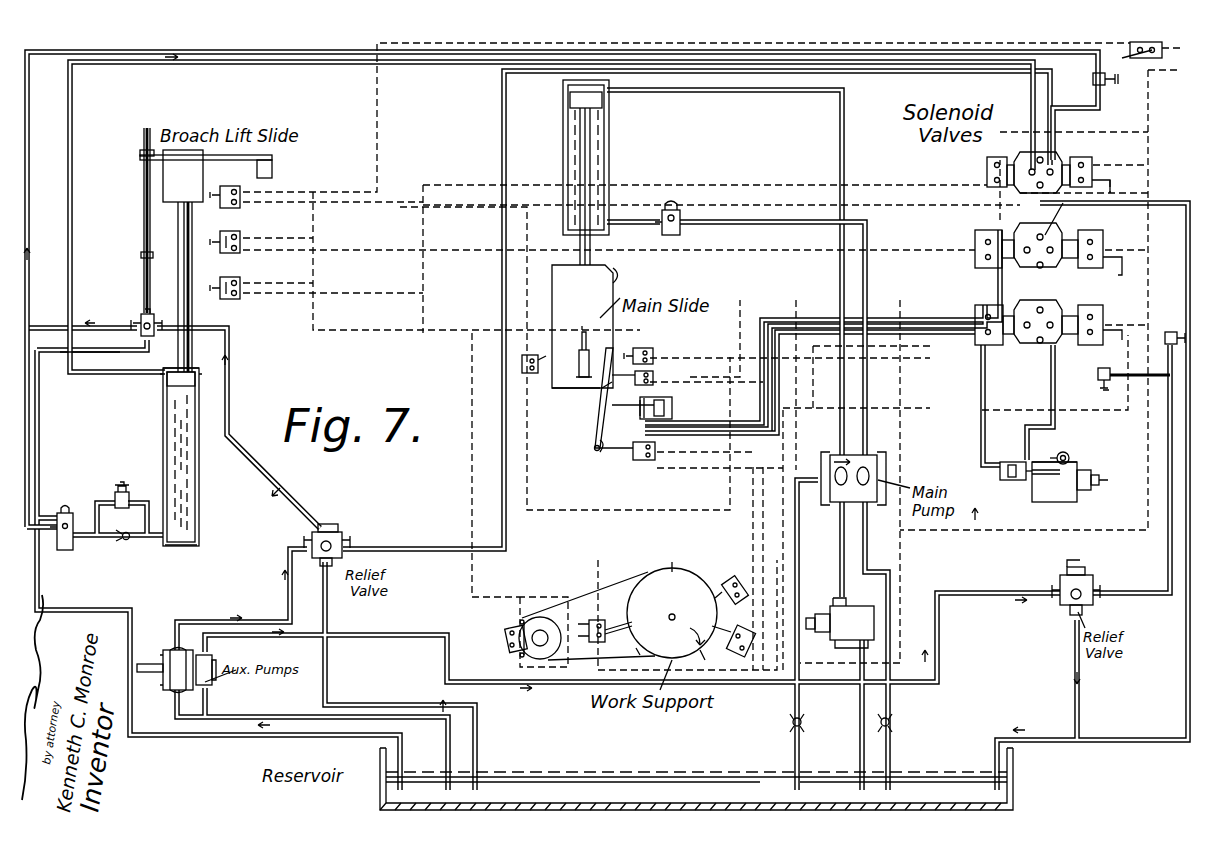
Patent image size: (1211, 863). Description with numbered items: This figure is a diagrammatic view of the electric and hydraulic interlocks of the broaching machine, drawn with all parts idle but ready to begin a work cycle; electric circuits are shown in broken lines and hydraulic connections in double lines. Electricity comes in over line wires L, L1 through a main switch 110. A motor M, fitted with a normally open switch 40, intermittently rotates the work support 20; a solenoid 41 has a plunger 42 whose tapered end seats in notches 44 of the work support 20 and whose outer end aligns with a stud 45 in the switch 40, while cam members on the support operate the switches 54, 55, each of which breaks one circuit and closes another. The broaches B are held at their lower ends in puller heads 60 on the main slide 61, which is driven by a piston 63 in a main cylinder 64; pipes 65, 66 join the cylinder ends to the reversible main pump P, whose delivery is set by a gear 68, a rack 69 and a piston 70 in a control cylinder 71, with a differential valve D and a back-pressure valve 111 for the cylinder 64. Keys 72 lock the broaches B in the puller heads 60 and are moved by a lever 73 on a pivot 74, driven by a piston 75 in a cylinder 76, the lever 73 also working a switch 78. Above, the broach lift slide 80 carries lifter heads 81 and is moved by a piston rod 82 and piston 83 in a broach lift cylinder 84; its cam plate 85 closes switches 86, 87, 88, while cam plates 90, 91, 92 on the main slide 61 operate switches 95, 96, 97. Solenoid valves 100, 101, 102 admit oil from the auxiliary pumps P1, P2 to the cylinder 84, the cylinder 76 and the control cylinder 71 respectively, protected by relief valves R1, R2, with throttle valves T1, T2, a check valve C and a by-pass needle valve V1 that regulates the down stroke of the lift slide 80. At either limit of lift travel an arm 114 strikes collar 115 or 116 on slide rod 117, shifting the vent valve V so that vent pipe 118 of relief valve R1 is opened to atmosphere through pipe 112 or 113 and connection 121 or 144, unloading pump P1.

The work support 20 is at (672, 611).
The switch 40 is at (520, 650).
The solenoid 41 is at (612, 636).
The plunger 42 is at (602, 622).
The notches 44 is at (670, 570).
The stud 45 is at (585, 621).
The switch 54 is at (730, 586).
The switch 55 is at (733, 648).
The puller heads 60 is at (580, 360).
The main slide 61 is at (552, 296).
The piston 63 is at (570, 98).
The main cylinder 64 is at (608, 152).
The pipe 65 is at (610, 93).
The pipe 66 is at (608, 223).
The gear 68 is at (1069, 458).
The rack 69 is at (1054, 476).
The piston 70 is at (1010, 462).
The control cylinder 71 is at (1004, 478).
The keys 72 is at (604, 380).
The lever 73 is at (597, 445).
The pivot 74 is at (604, 446).
The piston 75 is at (656, 398).
The cylinder 76 is at (672, 410).
The switch 78 is at (642, 460).
The broach lift slide 80 is at (174, 200).
The lifter heads 81 is at (272, 170).
The piston rod 82 is at (178, 283).
The piston 83 is at (166, 385).
The broach lift cylinder 84 is at (166, 442).
The cam plate 85 is at (200, 188).
The switch 86 is at (240, 207).
The switch 87 is at (240, 252).
The switch 88 is at (240, 298).
The cam plate 90 is at (552, 389).
The cam plate 91 is at (606, 386).
The cam plate 92 is at (620, 276).
The switch 95 is at (526, 373).
The switch 96 is at (665, 372).
The switch 97 is at (652, 352).
The solenoid-controlled valve 100 is at (1048, 160).
The solenoid-controlled valve 101 is at (1028, 228).
The solenoid-controlled valve 102 is at (1048, 345).
The main switch 110 is at (62, 551).
The back-pressure valve 111 is at (680, 228).
The pipe 112 is at (135, 322).
The pipe 113 is at (88, 352).
The arm 114 is at (140, 156).
The collar 115 is at (144, 146).
The collar 116 is at (141, 258).
The slide rod 117 is at (144, 228).
The vent pipe 118 is at (229, 410).
The lifter cylinder connection 121 is at (70, 222).
The lifter cylinder connection 144 is at (27, 184).
The broaches B is at (582, 328).
The check valve C is at (125, 541).
The differential valve D is at (850, 620).
The line wire L is at (1180, 52).
The line wire L1 is at (1178, 78).
The motor M is at (520, 652).
The main pump P is at (830, 480).
The auxiliary pump P1 is at (168, 658).
The auxiliary pump P2 is at (210, 682).
The relief valve R1 is at (343, 540).
The relief valve R2 is at (1093, 586).
The control or throttle valve T1 is at (1093, 80).
The control or throttle valve T2 is at (1098, 378).
The vent valve V is at (148, 337).
The by-pass needle valve V1 is at (115, 496).